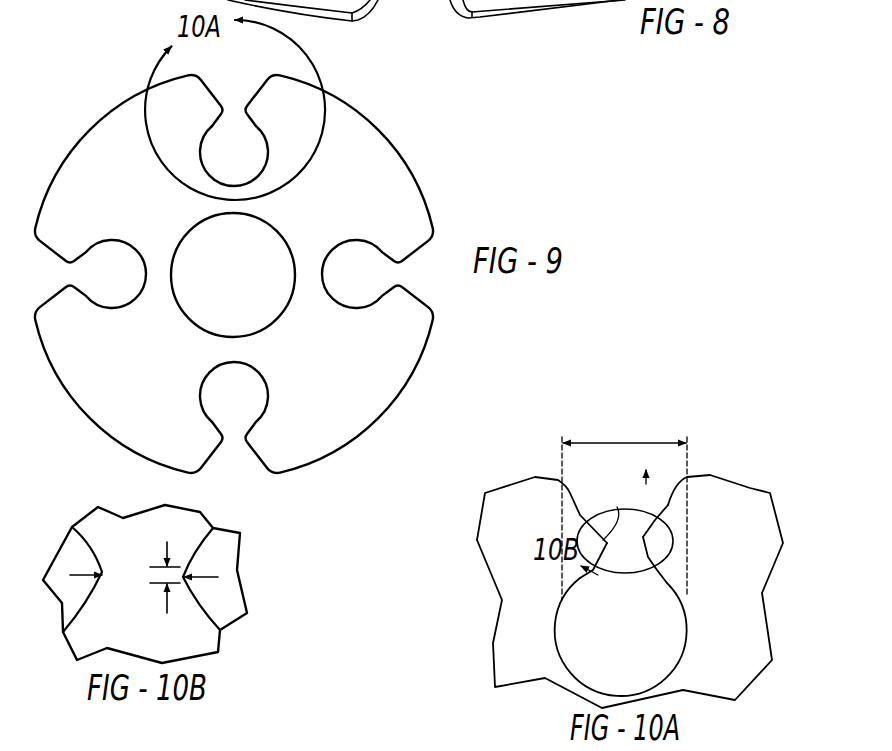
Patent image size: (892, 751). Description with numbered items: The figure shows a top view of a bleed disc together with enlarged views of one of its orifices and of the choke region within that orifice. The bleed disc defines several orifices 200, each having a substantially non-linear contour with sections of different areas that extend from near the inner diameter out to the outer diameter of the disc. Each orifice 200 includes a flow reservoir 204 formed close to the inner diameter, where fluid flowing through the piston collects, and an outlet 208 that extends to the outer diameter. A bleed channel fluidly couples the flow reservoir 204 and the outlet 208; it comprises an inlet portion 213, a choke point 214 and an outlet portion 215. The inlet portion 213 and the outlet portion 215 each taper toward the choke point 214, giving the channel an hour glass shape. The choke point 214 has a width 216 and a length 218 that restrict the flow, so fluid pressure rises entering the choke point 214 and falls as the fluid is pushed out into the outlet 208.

In FIG. 9, the orifice 200 is at (242, 147).
In FIG. 10A, the flow reservoir 204 is at (652, 635).
In FIG. 10A, the outlet 208 is at (758, 426).
In FIG. 10A, the inlet portion 213 is at (657, 560).
In FIG. 10A, the choke point 214 is at (644, 544).
In FIG. 10A, the outlet portion 215 is at (594, 442).
In FIG. 10B, the width 216 is at (208, 573).
In FIG. 10B, the length 218 is at (165, 610).